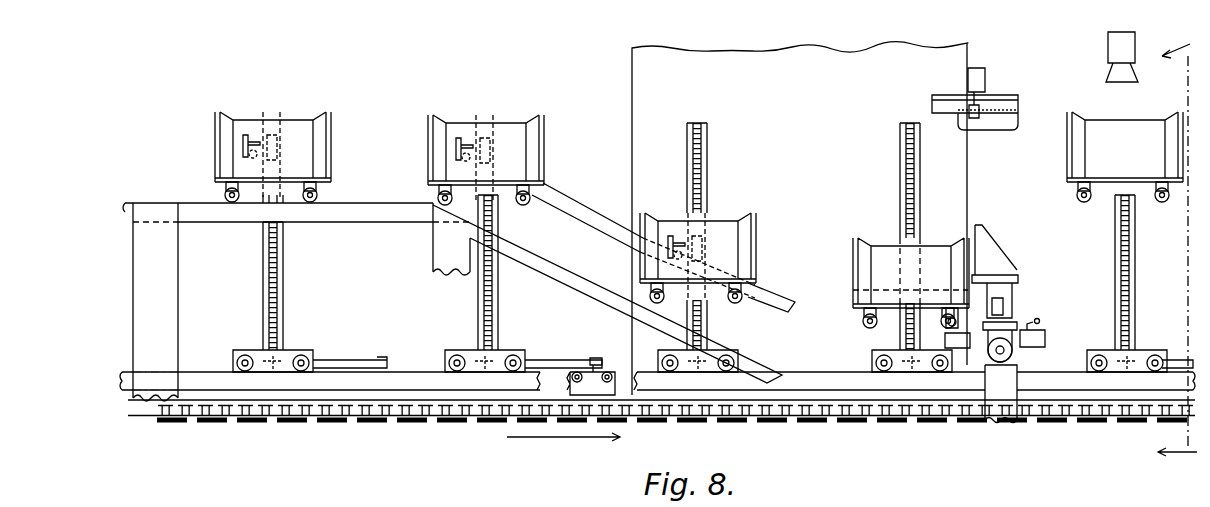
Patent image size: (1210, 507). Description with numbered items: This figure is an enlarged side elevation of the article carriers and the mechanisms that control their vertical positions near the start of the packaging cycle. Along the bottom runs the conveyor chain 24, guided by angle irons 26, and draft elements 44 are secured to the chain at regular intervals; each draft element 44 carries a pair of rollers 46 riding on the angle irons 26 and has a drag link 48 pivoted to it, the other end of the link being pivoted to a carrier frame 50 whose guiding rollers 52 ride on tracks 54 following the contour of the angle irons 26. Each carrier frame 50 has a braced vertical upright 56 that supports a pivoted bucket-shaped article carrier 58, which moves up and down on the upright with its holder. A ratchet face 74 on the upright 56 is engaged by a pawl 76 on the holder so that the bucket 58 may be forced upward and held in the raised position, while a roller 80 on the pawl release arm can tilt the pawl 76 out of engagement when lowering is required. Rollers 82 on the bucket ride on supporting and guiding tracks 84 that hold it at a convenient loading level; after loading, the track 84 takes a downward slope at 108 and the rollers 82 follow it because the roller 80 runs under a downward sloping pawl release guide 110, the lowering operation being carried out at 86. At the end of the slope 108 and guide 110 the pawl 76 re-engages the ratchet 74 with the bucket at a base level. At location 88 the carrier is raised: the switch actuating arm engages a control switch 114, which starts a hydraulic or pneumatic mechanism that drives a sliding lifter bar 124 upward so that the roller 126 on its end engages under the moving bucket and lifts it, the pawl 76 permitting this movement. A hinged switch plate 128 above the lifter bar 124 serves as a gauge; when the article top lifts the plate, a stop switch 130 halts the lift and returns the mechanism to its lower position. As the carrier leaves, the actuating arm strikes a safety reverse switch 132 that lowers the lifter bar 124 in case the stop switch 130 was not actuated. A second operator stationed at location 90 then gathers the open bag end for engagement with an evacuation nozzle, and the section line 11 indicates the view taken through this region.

The section line 11 is at (1177, 256).
The conveyor chain 24 is at (333, 421).
The angle irons 26 is at (435, 400).
The draft element 44 is at (593, 358).
The rollers 46 is at (606, 376).
The drag link 48 is at (360, 361).
The carrier frame 50 is at (242, 352).
The guiding rollers 52 is at (302, 350).
The tracks 54 is at (204, 380).
The vertical upright 56 is at (286, 308).
The article carrier 58 is at (322, 138).
The ratchet face 74 is at (284, 263).
The pawl 76 is at (278, 126).
The roller 80 is at (243, 156).
The rollers 82 is at (316, 194).
The supporting and guiding tracks 84 is at (228, 212).
The lowering operation location 86 is at (668, 119).
The raising location 88 is at (1014, 82).
The second operator location 90 is at (1092, 71).
The downward slope of track 108 is at (554, 270).
The pawl release guide 110 is at (598, 213).
The control switch 114 is at (950, 342).
The sliding lifter bar 124 is at (1017, 375).
The roller 126 is at (1013, 350).
The hinged switch plate 128 is at (1003, 122).
The stop switch 130 is at (968, 80).
The safety reverse switch 132 is at (1035, 322).